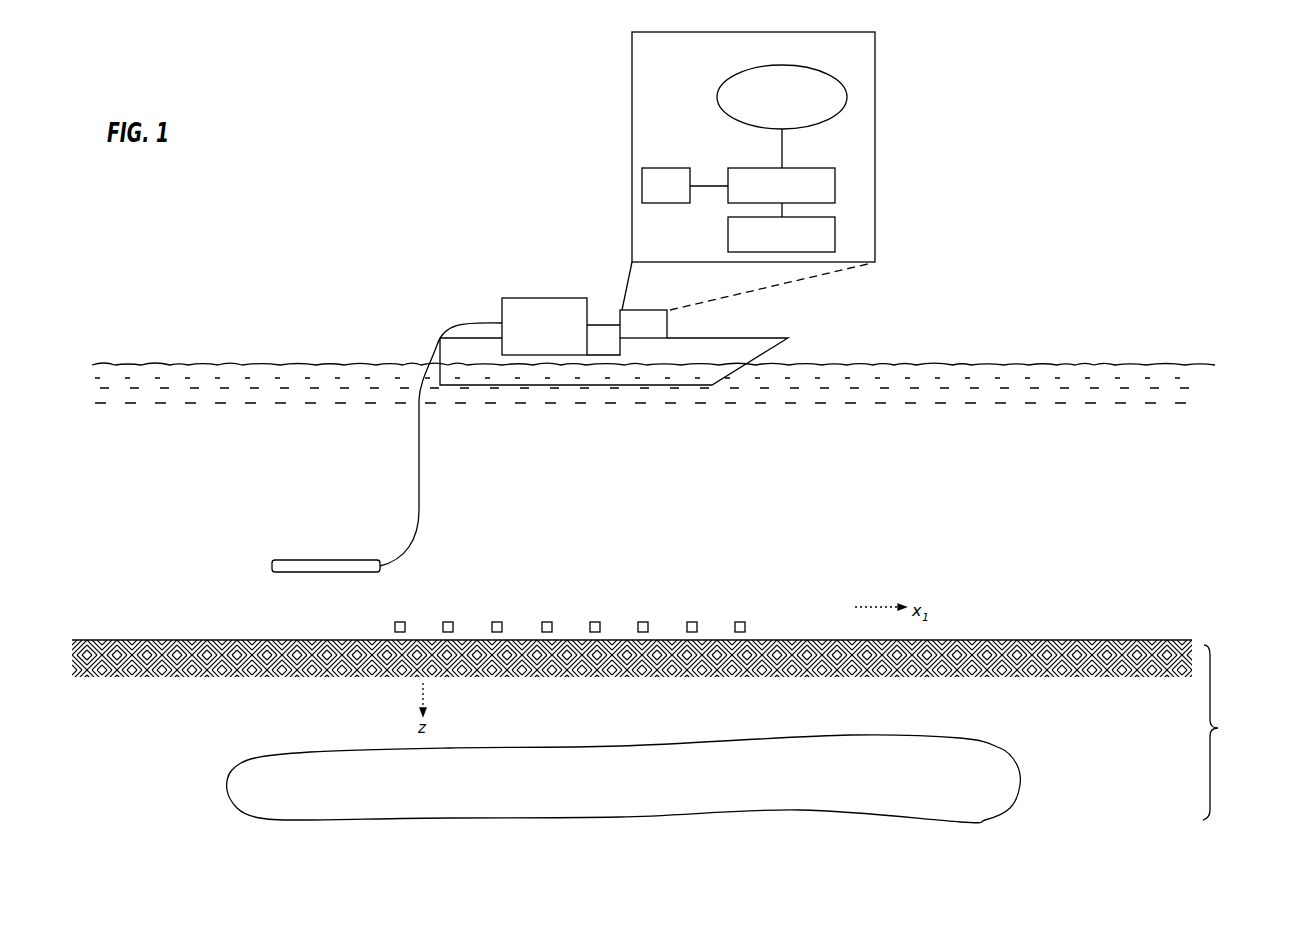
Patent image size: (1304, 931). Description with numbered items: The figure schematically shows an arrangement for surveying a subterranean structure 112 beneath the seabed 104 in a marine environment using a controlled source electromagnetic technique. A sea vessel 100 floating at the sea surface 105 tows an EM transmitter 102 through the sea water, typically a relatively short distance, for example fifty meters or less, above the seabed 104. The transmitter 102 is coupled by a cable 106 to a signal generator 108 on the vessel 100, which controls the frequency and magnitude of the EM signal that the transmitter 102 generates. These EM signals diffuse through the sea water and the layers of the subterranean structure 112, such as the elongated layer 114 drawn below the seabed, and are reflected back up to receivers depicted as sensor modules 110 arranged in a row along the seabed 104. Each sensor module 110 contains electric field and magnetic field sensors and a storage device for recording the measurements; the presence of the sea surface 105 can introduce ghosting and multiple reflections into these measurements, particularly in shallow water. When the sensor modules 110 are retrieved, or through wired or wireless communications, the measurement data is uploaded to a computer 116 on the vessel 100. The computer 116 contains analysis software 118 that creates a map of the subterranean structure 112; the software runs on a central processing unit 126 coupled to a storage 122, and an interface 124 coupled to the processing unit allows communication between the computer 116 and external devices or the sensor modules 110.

The sea vessel 100 is at (770, 352).
The EM transmitter 102 is at (305, 560).
The seabed 104 is at (978, 638).
The sea surface 105 is at (998, 362).
The cable 106 is at (422, 487).
The signal generator 108 is at (508, 298).
The sensor modules 110 is at (670, 323).
The subterranean structure 112 is at (1222, 728).
The reservoir 114 is at (1015, 775).
The computer 116 is at (875, 145).
The analysis software 118 is at (847, 97).
The storage 122 is at (835, 228).
The interface 124 is at (644, 168).
The CPU 126 is at (835, 188).